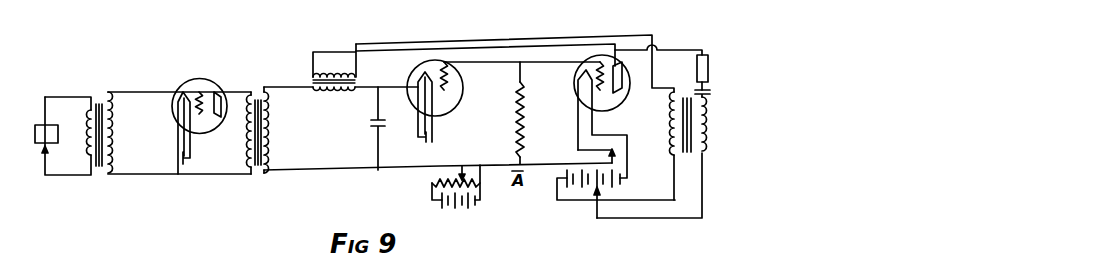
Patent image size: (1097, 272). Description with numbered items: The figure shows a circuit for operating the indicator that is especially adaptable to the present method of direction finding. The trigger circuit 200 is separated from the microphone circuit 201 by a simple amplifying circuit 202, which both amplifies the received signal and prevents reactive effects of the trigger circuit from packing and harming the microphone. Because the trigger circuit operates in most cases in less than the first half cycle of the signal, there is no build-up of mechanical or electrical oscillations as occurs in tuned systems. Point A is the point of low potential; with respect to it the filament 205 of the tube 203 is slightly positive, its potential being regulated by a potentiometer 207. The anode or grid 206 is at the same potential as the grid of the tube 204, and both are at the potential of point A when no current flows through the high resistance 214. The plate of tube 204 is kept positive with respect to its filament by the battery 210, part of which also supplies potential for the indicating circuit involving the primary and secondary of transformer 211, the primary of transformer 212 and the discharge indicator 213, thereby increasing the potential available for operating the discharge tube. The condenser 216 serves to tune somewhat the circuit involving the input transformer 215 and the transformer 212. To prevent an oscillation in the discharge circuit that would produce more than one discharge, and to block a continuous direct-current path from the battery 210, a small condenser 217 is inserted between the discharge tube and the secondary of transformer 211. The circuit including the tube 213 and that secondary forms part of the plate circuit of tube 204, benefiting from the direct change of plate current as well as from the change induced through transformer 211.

The trigger circuit 200 is at (438, 128).
The microphone circuit 201 is at (74, 133).
The amplifying circuit 202 is at (200, 127).
The tube 203 is at (439, 71).
The tube 204 is at (598, 58).
The filament 205 is at (412, 80).
The anode or grid 206 is at (453, 70).
The potentiometer 207 is at (470, 187).
The battery 210 is at (582, 190).
The transformer 211 is at (690, 156).
The transformer 212 is at (310, 78).
The discharge indicator 213 is at (710, 70).
The high resistance 214 is at (526, 131).
The input transformer 215 is at (253, 171).
The condenser 216 is at (371, 124).
The small condenser 217 is at (711, 93).